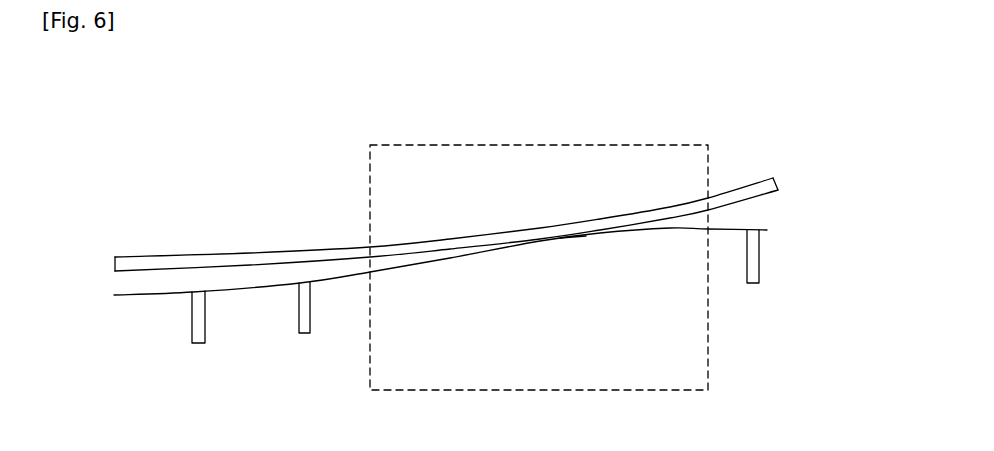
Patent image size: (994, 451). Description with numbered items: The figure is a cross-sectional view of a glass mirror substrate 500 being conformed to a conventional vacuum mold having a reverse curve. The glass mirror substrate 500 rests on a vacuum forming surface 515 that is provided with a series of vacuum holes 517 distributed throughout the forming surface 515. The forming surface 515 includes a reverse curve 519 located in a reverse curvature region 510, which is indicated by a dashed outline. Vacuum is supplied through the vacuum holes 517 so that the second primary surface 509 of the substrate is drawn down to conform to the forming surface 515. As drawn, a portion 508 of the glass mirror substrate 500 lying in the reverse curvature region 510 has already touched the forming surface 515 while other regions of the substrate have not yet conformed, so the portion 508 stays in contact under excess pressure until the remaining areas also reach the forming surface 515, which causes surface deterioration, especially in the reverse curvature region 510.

The glass mirror substrate 500 is at (114, 131).
The portion of the glass mirror substrate 508 is at (255, 253).
The second primary surface 509 is at (142, 271).
The reverse curvature region 510 is at (673, 143).
The vacuum forming surface 515 is at (250, 285).
The vacuum holes 517 is at (192, 320).
The reverse curve 519 is at (573, 237).